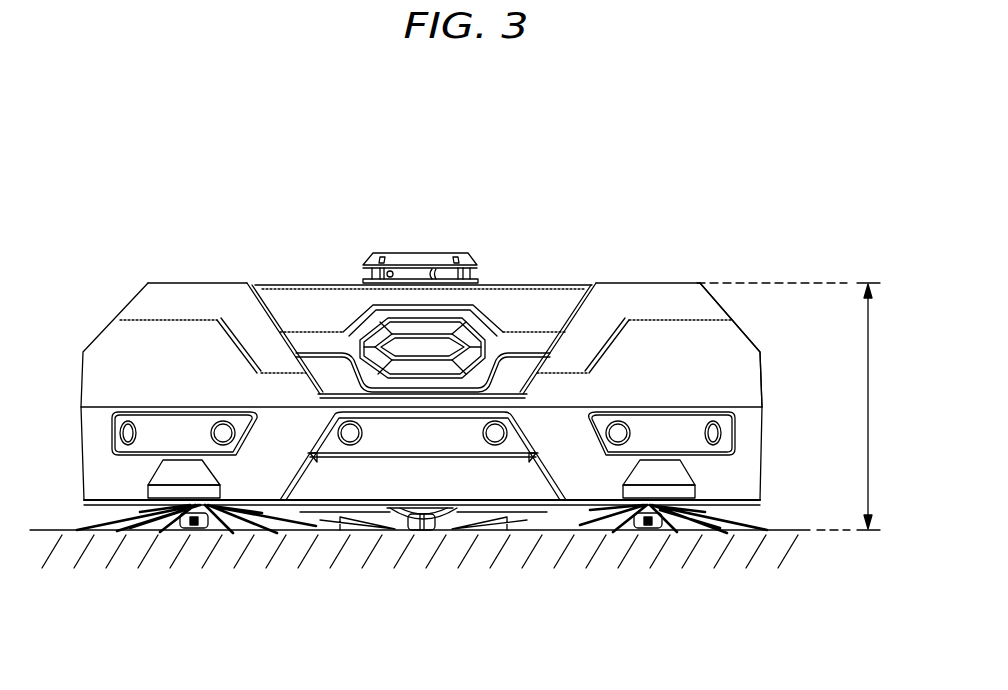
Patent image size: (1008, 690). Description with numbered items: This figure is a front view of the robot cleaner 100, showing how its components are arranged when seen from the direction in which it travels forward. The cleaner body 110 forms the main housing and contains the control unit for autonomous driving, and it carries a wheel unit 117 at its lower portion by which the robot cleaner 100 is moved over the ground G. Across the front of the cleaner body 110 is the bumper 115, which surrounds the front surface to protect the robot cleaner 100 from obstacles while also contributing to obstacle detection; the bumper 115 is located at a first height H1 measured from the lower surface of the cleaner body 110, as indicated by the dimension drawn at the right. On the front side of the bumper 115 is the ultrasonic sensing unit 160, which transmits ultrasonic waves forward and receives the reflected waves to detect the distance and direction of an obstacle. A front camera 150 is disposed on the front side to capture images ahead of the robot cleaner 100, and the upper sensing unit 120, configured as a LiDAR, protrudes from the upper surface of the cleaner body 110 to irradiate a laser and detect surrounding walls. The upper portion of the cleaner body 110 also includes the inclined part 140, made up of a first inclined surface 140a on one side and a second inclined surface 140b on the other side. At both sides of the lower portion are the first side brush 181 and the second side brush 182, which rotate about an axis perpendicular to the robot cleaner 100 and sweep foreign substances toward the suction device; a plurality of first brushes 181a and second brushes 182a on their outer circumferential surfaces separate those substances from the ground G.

The robot cleaner 100 is at (181, 150).
The cleaner body 110 is at (308, 303).
The bumper 115 is at (715, 345).
The wheel unit 117 is at (200, 527).
The upper sensing unit 120 is at (421, 262).
The inclined part 140 is at (413, 204).
The first inclined surface 140a is at (115, 322).
The second inclined surface 140b is at (712, 300).
The front camera 150 is at (425, 348).
The ultrasonic sensing unit 160 is at (223, 442).
The first side brush 181 is at (175, 473).
The first brushes 181a is at (195, 510).
The second side brush 182 is at (668, 475).
The second brushes 182a is at (655, 515).
The ground G is at (790, 547).
The first height H1 is at (799, 406).